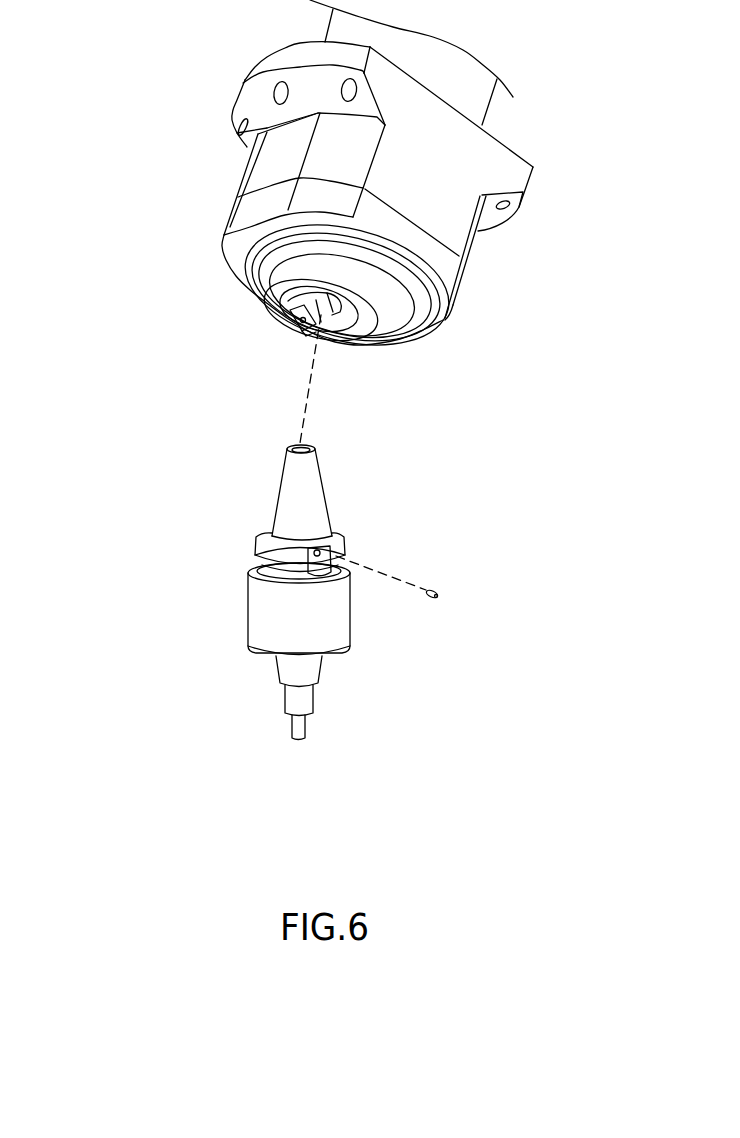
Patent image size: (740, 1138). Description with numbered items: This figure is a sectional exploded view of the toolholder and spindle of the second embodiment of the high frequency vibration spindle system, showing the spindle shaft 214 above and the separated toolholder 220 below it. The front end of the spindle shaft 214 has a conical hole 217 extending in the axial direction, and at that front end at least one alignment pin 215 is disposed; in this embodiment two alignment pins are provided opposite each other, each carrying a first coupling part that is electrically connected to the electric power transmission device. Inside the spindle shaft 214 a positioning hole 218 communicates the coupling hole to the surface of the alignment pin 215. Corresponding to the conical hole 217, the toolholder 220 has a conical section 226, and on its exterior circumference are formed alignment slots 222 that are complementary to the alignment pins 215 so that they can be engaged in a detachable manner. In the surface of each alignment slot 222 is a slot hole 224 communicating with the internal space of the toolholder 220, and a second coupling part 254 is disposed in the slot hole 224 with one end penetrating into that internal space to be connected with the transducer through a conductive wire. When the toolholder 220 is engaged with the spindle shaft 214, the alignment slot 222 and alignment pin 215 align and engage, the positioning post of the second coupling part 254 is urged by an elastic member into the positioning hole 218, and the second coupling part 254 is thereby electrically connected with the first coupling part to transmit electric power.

The spindle shaft 214 is at (373, 302).
The alignment pin 215 is at (290, 322).
The conical hole 217 is at (305, 308).
The positioning hole 218 is at (317, 327).
The toolholder 220 is at (248, 612).
The alignment slot 222 is at (305, 553).
The slot hole 224 is at (320, 552).
The conical section 226 is at (325, 487).
The second coupling part 254 is at (440, 593).